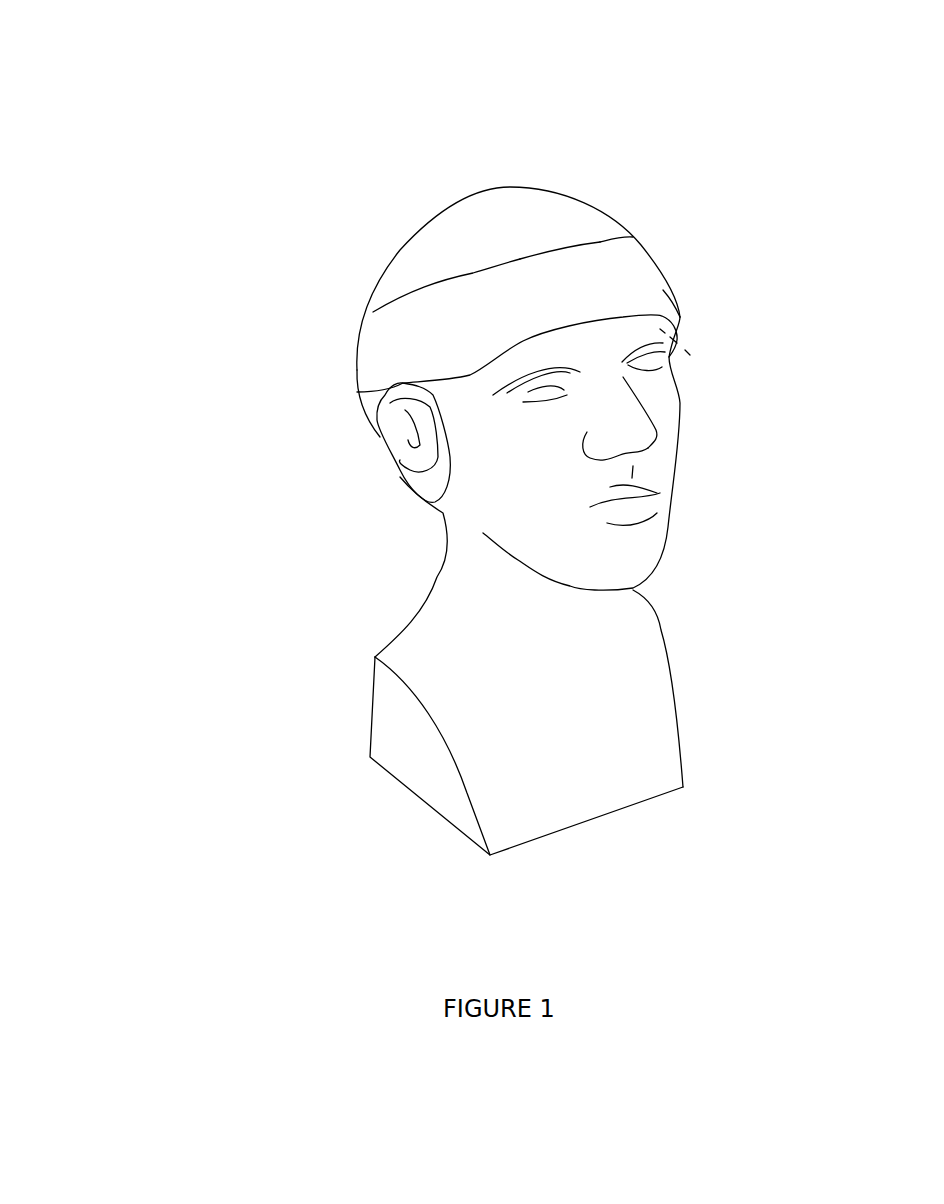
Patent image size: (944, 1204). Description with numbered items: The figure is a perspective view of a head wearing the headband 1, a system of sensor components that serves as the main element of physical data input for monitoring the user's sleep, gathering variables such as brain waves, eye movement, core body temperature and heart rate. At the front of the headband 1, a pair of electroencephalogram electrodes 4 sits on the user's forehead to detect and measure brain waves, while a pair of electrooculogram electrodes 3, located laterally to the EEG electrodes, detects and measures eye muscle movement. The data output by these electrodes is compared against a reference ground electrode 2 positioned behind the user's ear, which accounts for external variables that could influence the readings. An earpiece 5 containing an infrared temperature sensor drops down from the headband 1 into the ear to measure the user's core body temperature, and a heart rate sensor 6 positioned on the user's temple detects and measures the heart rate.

The headband 1 is at (678, 308).
The reference ground electrode 2 is at (698, 363).
The electrooculogram (EOG) electrodes 3 is at (632, 262).
The electroencephalogram (EEG) electrodes 4 is at (582, 263).
The earpiece 5 is at (412, 452).
The heart rate sensor 6 is at (433, 324).